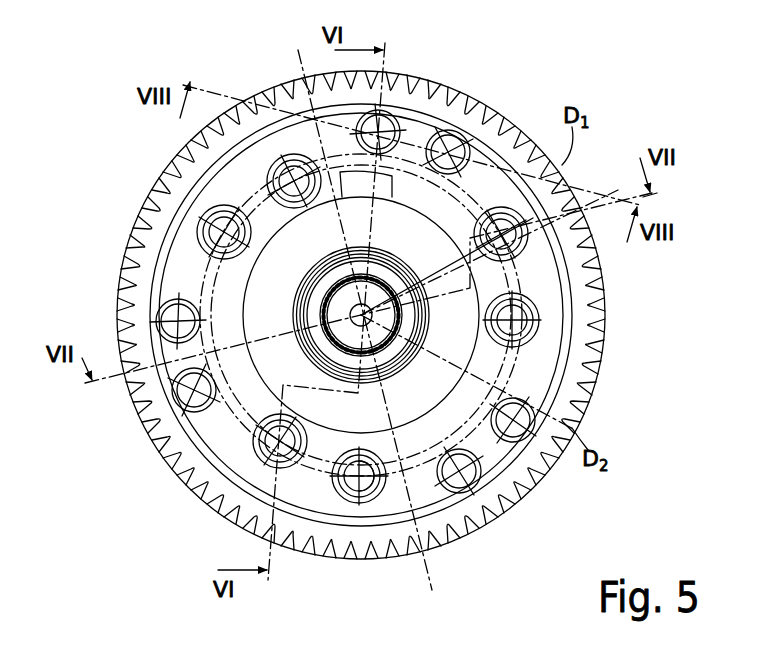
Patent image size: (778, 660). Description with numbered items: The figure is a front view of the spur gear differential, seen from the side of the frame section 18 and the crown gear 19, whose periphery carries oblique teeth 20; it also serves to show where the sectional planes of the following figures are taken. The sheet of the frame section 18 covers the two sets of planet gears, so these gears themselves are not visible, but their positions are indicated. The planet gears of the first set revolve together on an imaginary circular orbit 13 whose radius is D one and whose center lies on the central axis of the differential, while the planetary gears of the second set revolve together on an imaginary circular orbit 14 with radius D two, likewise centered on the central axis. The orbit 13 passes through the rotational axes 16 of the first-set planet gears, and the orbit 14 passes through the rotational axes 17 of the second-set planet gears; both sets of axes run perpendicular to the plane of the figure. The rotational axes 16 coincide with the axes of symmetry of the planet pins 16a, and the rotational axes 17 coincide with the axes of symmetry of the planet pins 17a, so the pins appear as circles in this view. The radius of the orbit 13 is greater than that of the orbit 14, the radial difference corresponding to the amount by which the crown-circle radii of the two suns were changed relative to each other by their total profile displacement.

The imaginary circular orbit 13 is at (478, 150).
The imaginary circular orbit 14 is at (555, 430).
The rotational axes 16 is at (200, 210).
The planet pins 16a is at (590, 275).
The rotational axes 17 is at (281, 152).
The planet pins 17a is at (273, 155).
The frame section 18 is at (498, 518).
The crown gear 19 is at (453, 128).
The oblique teeth 20 is at (407, 74).